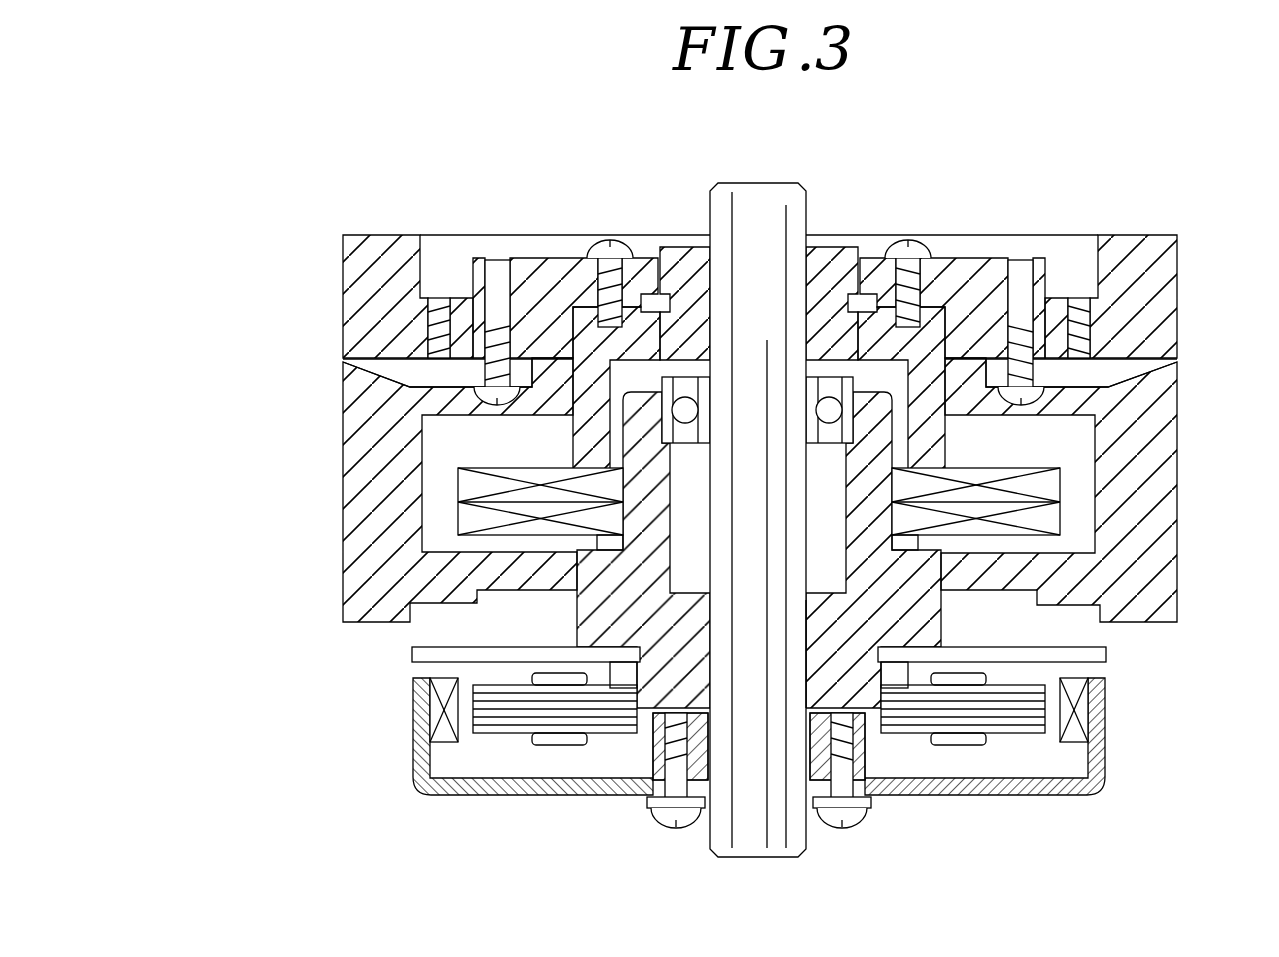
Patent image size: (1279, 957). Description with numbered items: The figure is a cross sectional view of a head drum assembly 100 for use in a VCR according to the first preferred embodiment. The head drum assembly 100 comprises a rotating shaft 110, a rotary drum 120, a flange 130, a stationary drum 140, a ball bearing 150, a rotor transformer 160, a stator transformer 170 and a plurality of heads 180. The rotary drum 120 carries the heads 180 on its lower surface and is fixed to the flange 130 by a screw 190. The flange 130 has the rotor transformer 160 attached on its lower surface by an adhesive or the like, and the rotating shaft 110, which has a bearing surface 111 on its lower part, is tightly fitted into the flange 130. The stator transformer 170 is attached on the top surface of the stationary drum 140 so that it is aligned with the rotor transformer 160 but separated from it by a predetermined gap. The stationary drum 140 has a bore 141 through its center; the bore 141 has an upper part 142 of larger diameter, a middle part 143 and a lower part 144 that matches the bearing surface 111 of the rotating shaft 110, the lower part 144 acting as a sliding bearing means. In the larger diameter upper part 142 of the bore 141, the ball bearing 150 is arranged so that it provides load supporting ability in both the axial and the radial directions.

The head drum assembly 100 is at (1100, 158).
The rotating shaft 110 is at (808, 205).
The bearing surface 111 is at (881, 736).
The rotary drum 120 is at (343, 290).
The flange 130 is at (680, 255).
The stationary drum 140 is at (343, 535).
The bore 141 is at (639, 682).
The upper part 142 is at (660, 547).
The middle part 143 is at (573, 592).
The lower part 144 is at (715, 624).
The ball bearing 150 is at (660, 403).
The rotor transformer 160 is at (1050, 488).
The stator transformer 170 is at (1050, 528).
The heads 180 is at (410, 370).
The screw 190 is at (605, 265).